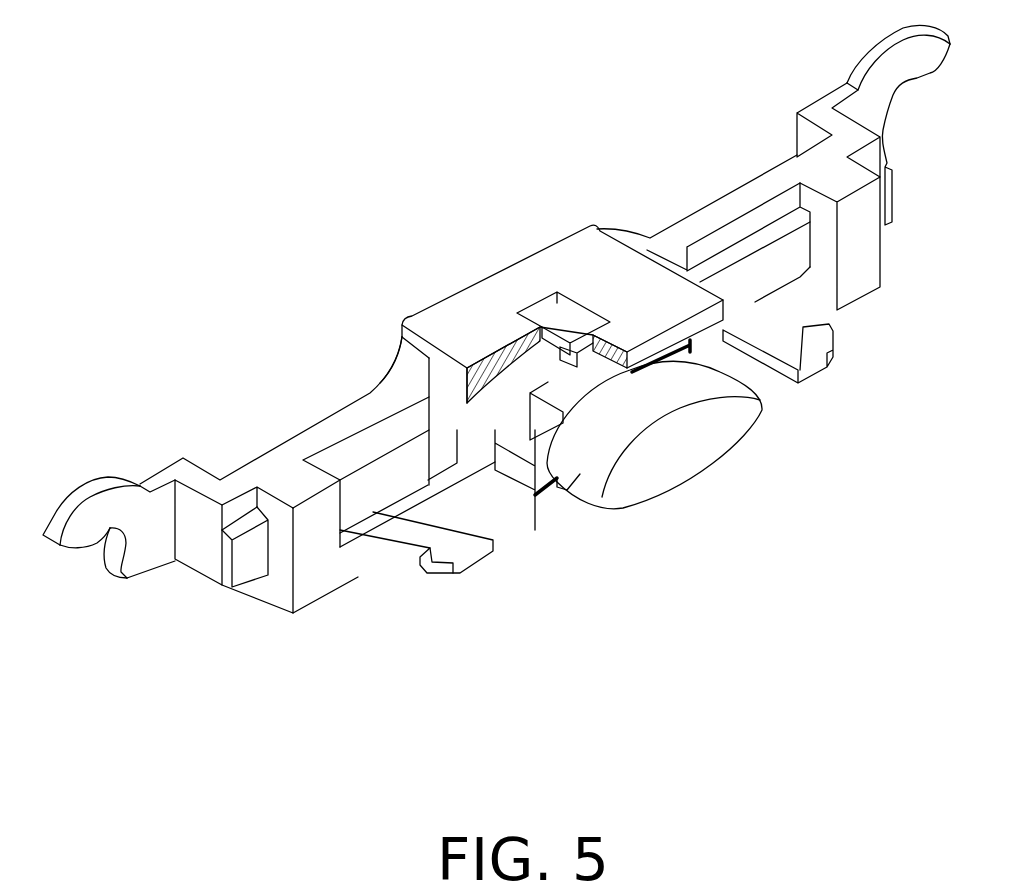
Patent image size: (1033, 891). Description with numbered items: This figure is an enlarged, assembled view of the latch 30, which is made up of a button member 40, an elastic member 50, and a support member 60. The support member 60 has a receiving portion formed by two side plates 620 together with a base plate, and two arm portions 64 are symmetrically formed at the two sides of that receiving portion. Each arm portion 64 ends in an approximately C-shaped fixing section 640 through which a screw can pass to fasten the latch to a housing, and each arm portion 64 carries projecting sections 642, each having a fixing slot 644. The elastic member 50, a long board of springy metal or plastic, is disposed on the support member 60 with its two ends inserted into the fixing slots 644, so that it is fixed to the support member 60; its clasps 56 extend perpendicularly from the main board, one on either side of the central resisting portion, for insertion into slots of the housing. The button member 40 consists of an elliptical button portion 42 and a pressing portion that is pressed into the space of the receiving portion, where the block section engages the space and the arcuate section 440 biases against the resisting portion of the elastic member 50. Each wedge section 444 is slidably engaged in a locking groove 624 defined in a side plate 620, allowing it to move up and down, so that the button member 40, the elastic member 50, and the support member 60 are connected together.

The latch 30 is at (611, 53).
The button member 40 is at (758, 443).
The button portion 42 is at (640, 410).
The elastic member 50 is at (358, 498).
The clasp 56 is at (462, 545).
The support member 60 is at (188, 580).
The arm portion 64 is at (345, 418).
The arcuate section 440 is at (540, 473).
The wedge section 444 is at (580, 350).
The side plate 620 is at (646, 283).
The locking groove 624 is at (580, 310).
The fixing section 640 is at (138, 557).
The projecting section 642 is at (277, 587).
The fixing slot 644 is at (267, 557).